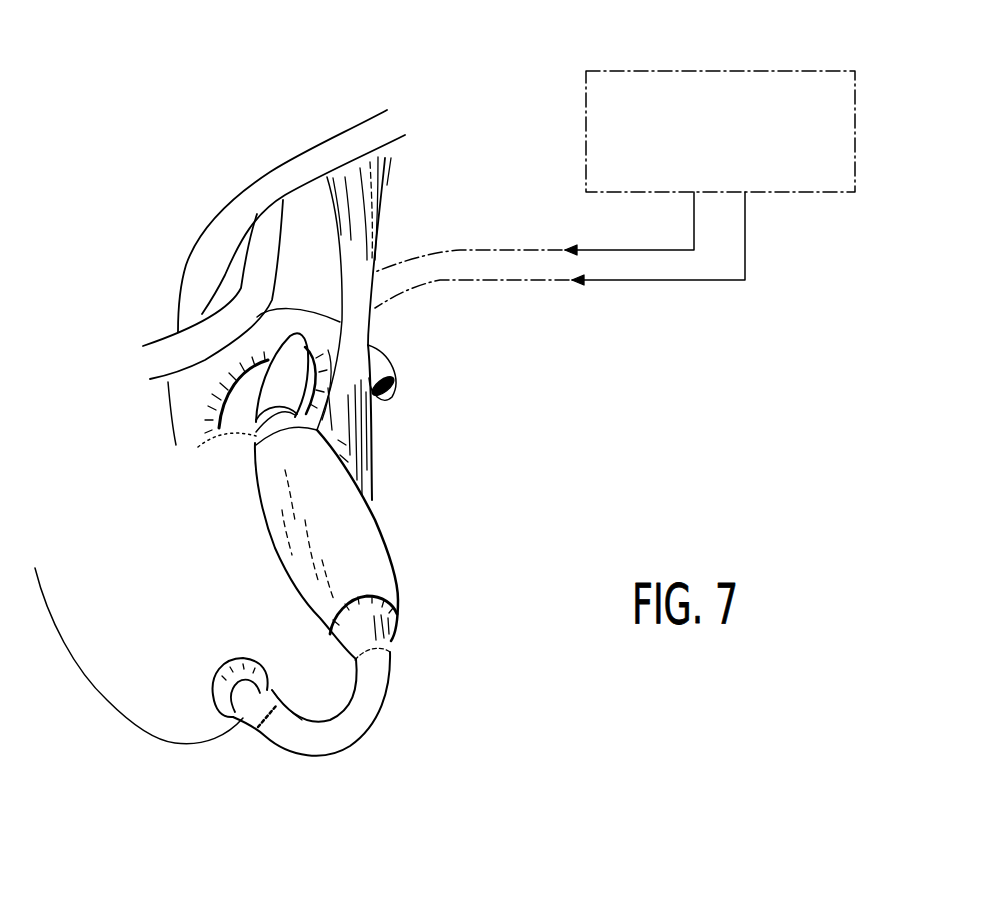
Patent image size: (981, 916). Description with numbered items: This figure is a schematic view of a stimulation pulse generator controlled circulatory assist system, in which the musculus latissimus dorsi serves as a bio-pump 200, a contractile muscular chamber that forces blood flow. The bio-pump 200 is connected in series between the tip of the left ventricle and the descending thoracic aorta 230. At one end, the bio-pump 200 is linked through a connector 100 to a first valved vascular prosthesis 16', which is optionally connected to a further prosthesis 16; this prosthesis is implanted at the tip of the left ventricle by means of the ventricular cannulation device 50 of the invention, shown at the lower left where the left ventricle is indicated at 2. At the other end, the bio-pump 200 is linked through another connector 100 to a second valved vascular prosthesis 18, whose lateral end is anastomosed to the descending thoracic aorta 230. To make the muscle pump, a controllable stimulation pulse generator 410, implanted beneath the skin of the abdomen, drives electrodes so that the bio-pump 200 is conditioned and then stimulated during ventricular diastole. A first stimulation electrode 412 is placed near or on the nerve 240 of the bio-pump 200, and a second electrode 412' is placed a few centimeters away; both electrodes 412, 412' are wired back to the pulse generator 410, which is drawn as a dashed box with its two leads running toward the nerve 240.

The anastomosis ring 2 is at (228, 716).
The prosthesis 16 is at (305, 681).
The first valved vascular prosthesis 16' is at (323, 716).
The second valved vascular prosthesis 18 is at (302, 347).
The ventricular cannulation device 50 is at (213, 703).
The connector 100 is at (257, 422).
The bio-pump 200 is at (283, 537).
The descending thoracic aorta 230 is at (287, 308).
The nerve 240 is at (375, 200).
The controllable stimulation pulse generator 410 is at (695, 70).
The first stimulation electrode 412 is at (603, 250).
The second electrode 412' is at (534, 232).